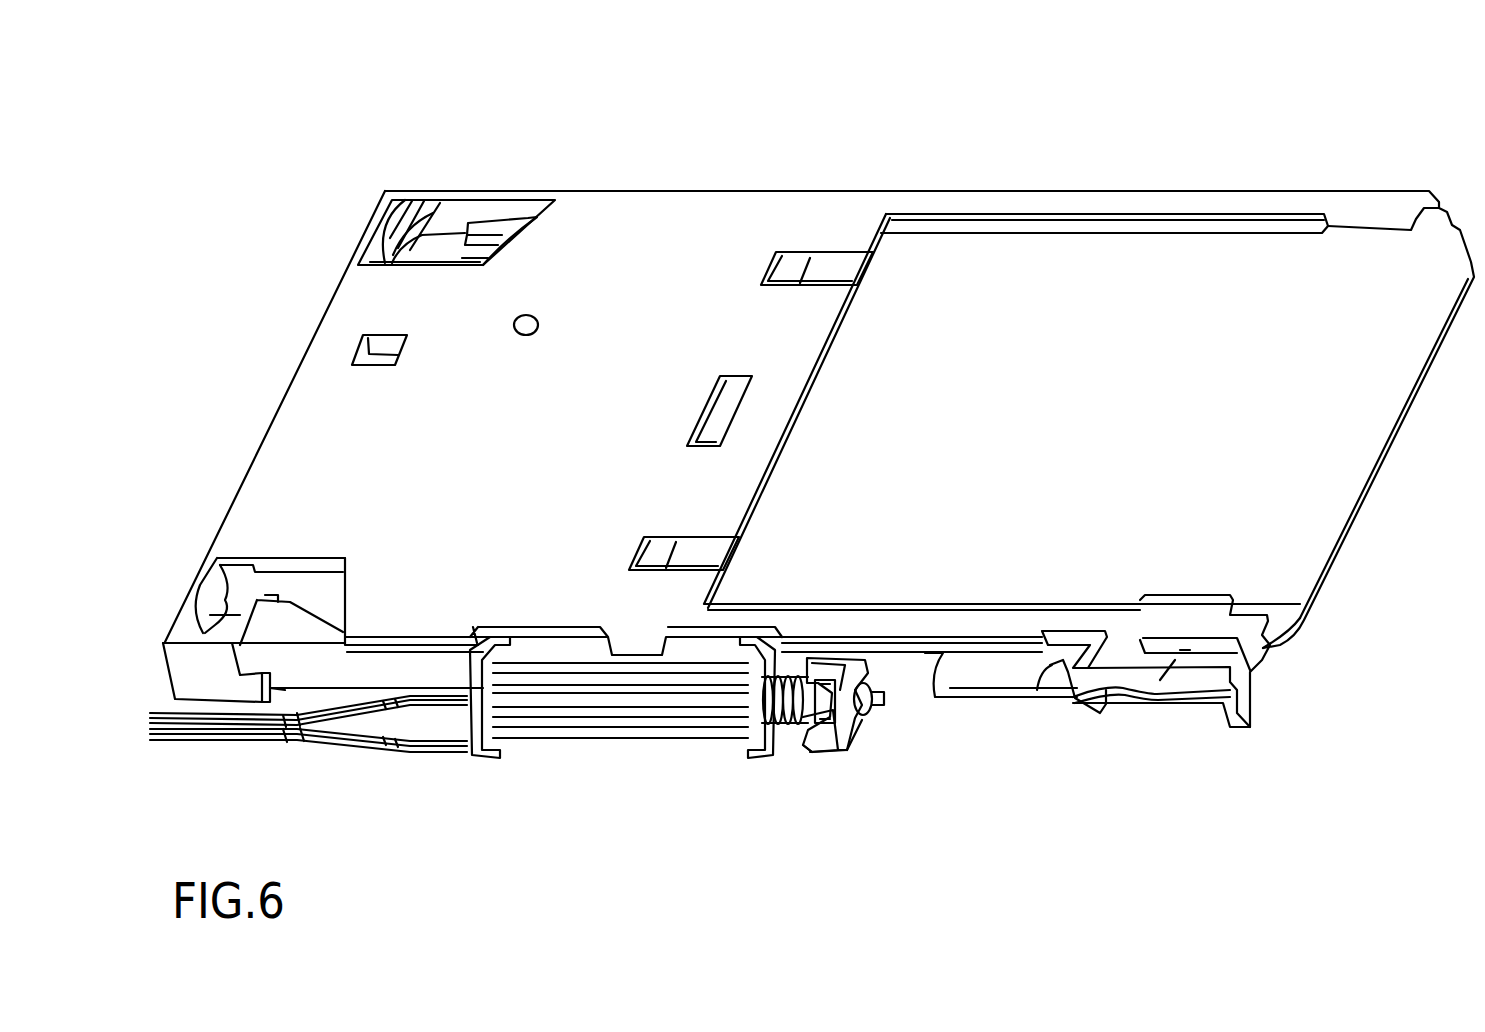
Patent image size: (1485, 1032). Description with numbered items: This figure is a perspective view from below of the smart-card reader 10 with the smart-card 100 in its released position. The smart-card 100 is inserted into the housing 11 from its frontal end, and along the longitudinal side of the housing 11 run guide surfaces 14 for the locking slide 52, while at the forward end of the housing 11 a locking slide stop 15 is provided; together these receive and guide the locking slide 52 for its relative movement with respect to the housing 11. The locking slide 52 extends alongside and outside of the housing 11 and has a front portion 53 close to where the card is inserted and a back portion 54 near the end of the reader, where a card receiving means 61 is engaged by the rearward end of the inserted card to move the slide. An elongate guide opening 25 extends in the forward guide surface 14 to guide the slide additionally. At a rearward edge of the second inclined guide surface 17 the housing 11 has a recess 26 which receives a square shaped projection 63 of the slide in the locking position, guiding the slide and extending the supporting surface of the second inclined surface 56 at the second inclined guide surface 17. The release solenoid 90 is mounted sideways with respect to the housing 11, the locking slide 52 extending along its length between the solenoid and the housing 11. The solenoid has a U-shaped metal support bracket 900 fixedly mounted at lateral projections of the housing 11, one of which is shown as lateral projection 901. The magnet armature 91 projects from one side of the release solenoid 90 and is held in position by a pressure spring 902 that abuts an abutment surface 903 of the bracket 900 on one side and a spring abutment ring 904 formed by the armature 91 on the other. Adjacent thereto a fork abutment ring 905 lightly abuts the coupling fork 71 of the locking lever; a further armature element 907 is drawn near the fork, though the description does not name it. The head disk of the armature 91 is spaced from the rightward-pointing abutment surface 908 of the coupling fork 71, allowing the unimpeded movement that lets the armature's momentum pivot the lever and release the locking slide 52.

The smart-card reader 10 is at (287, 128).
The housing 11 is at (800, 186).
The smart-card 100 is at (1377, 475).
The guide surfaces 14 is at (377, 650).
The locking slide stop 15 is at (1260, 693).
The second inclined guide surface 17 is at (1173, 680).
The guide opening 25 is at (1185, 650).
The recess 26 is at (1070, 630).
The locking slide 52 is at (977, 726).
The front portion 53 is at (1010, 706).
The back portion 54 is at (287, 705).
The second inclined surface 56 is at (1110, 673).
The card receiving means 61 is at (255, 640).
The square shaped projection 63 is at (1045, 672).
The coupling fork 71 is at (845, 748).
The release solenoid 90 is at (585, 738).
The metal support bracket 900 is at (483, 742).
The lateral projection 901 is at (632, 648).
The pressure spring 902 is at (806, 752).
The abutment surface 903 is at (753, 748).
The spring abutment ring 904 is at (810, 663).
The fork abutment ring 905 is at (832, 665).
The screw 907 is at (887, 653).
The abutment surface 908 is at (857, 742).
The magnet armature 91 is at (813, 653).